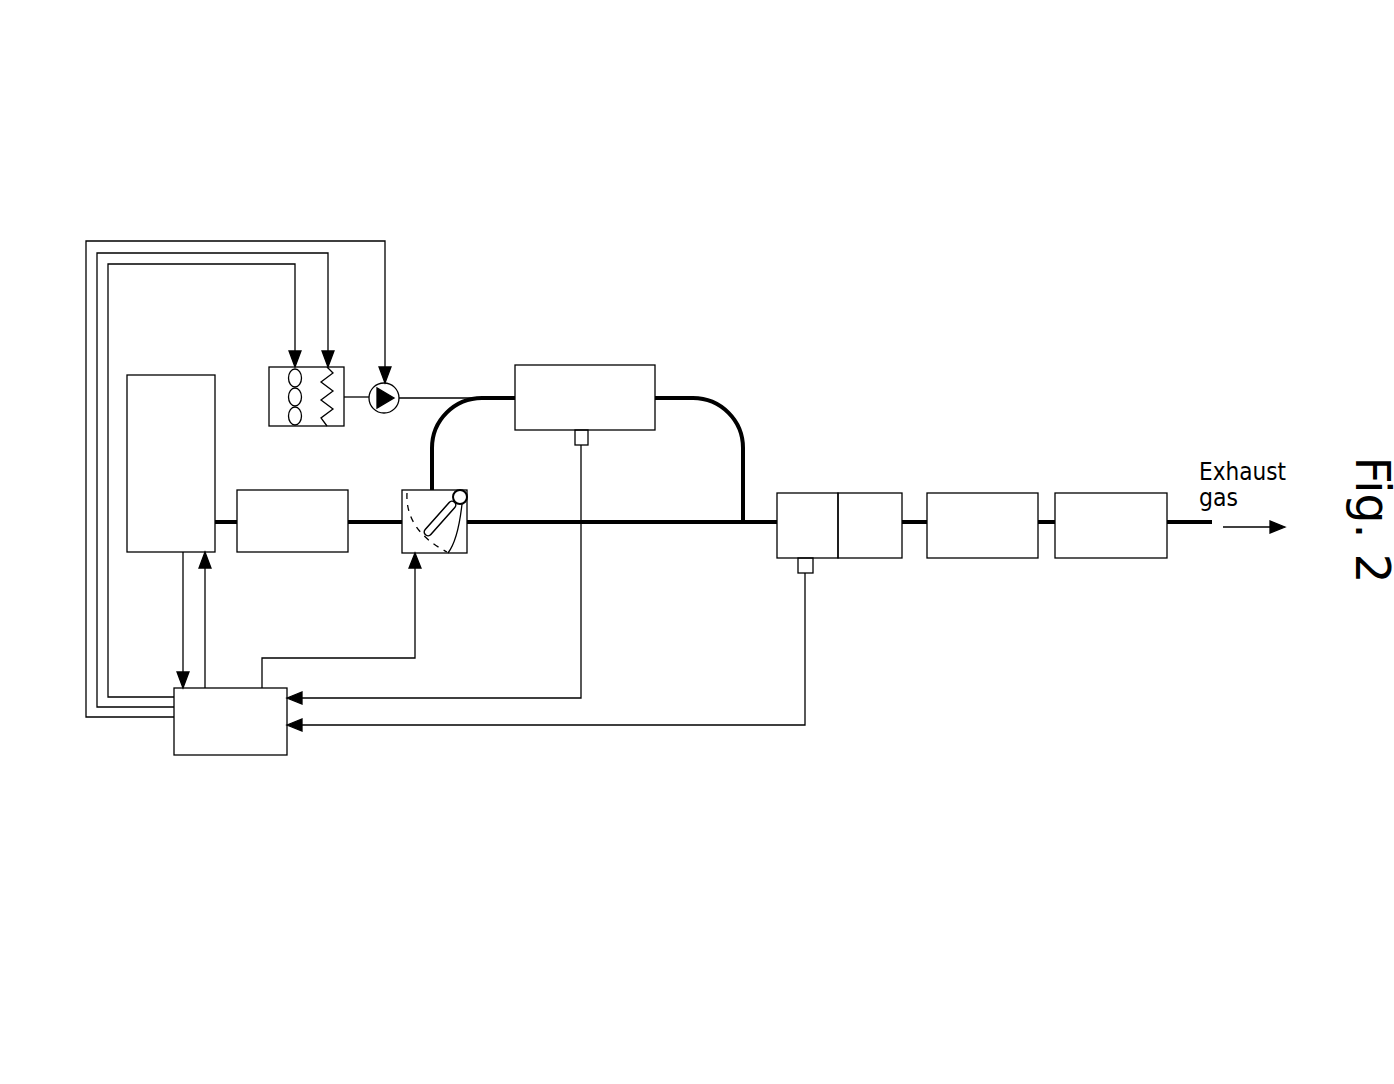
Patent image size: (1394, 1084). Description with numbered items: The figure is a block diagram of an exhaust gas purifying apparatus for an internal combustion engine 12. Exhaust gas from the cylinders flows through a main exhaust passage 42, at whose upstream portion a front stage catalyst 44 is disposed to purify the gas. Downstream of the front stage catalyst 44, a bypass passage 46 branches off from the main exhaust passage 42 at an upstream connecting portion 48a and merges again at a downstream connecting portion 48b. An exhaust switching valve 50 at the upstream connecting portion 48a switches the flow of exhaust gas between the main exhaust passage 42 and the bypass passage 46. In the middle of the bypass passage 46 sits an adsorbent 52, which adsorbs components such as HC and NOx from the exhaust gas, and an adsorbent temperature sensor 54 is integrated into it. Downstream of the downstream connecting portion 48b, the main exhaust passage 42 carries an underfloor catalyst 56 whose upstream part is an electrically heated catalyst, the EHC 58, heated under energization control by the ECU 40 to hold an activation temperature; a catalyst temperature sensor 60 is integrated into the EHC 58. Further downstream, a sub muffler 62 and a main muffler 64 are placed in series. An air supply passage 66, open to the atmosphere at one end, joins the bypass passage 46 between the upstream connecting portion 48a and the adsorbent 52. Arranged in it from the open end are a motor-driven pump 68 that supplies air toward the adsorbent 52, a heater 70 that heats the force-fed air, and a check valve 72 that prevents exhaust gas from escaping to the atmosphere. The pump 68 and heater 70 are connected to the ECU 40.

The internal combustion engine 12 is at (189, 368).
The ECU 40 is at (215, 688).
The main exhaust passage 42 is at (222, 518).
The front stage catalyst 44 is at (293, 553).
The bypass passage 46 is at (720, 403).
The upstream connecting portion 48a is at (433, 490).
The downstream connecting portion 48b is at (722, 518).
The exhaust switching valve 50 is at (448, 553).
The adsorbent 52 is at (565, 364).
The adsorbent temperature sensor 54 is at (585, 447).
The underfloor catalyst 56 is at (868, 484).
The EHC 58 is at (798, 492).
The catalyst temperature sensor 60 is at (810, 575).
The sub muffler 62 is at (995, 492).
The main muffler 64 is at (1122, 492).
The air supply passage 66 is at (438, 397).
The motor-driven pump 68 is at (295, 426).
The heater 70 is at (327, 426).
The check valve 72 is at (397, 385).